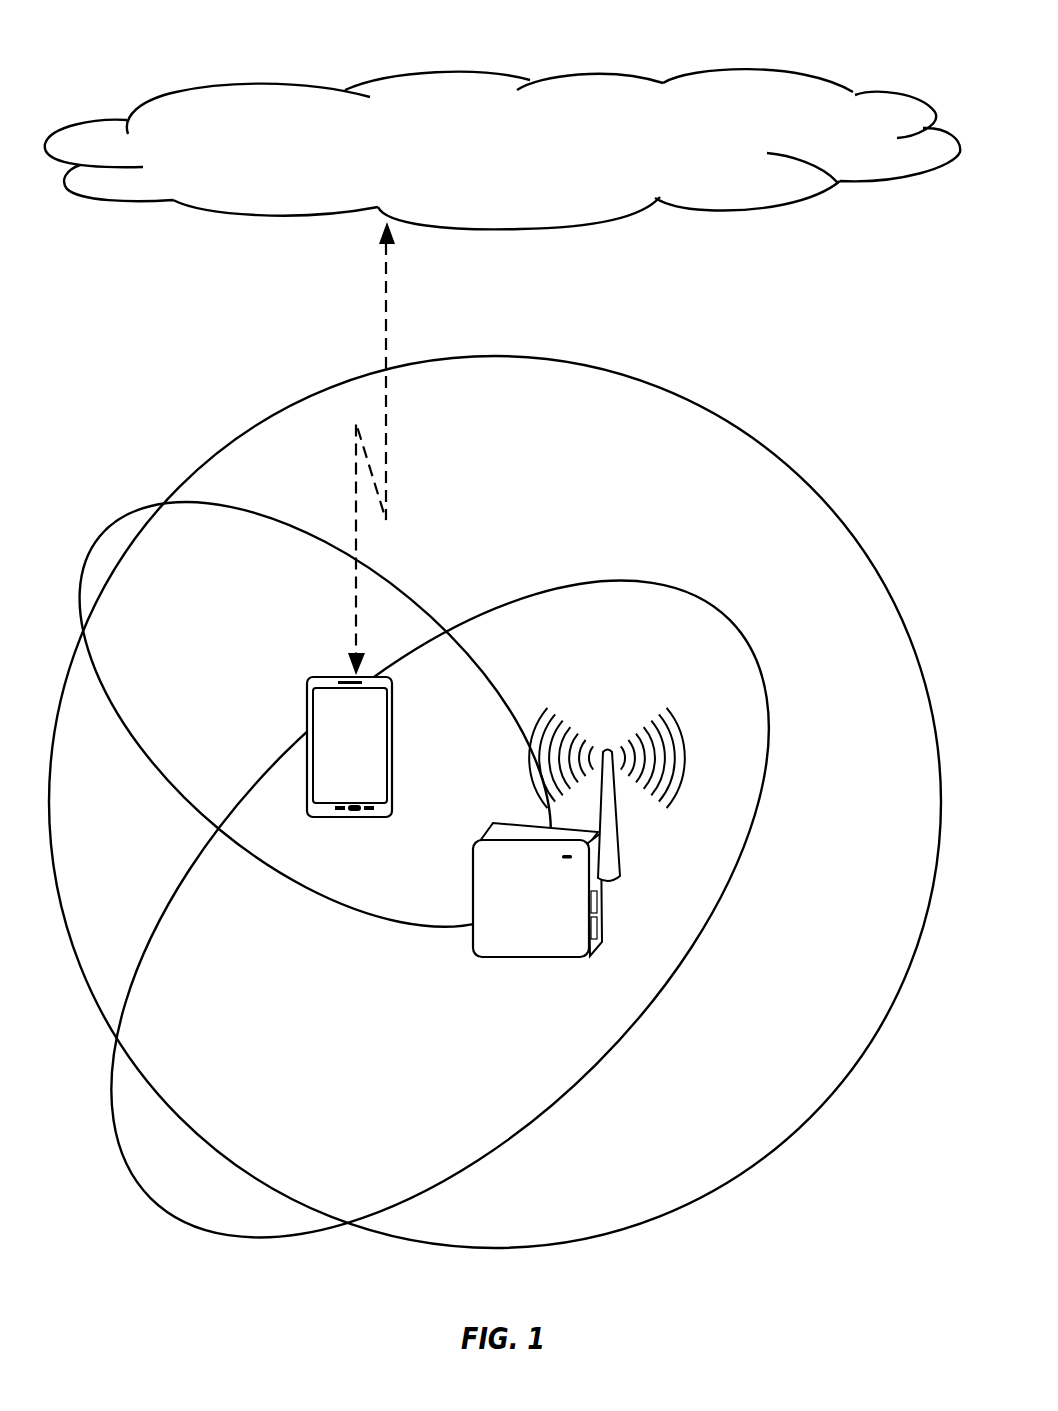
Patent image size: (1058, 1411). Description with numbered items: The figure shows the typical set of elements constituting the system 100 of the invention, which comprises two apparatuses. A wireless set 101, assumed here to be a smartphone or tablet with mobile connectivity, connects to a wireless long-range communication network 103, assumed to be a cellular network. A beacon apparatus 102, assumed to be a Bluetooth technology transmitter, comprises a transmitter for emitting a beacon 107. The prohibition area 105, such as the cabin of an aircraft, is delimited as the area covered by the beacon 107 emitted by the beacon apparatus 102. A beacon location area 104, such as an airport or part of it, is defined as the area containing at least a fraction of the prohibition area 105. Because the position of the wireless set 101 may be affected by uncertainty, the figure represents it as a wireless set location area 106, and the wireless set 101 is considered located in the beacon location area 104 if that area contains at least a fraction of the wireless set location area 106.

The communication system 100 is at (180, 50).
The wireless set 101 is at (330, 677).
The beacon apparatus 102 is at (600, 927).
The wireless long-range communication network 103 is at (800, 72).
The beacon location area 104 is at (555, 362).
The prohibition area 105 is at (695, 590).
The wireless set location area 106 is at (146, 498).
The beacon 107 is at (690, 728).